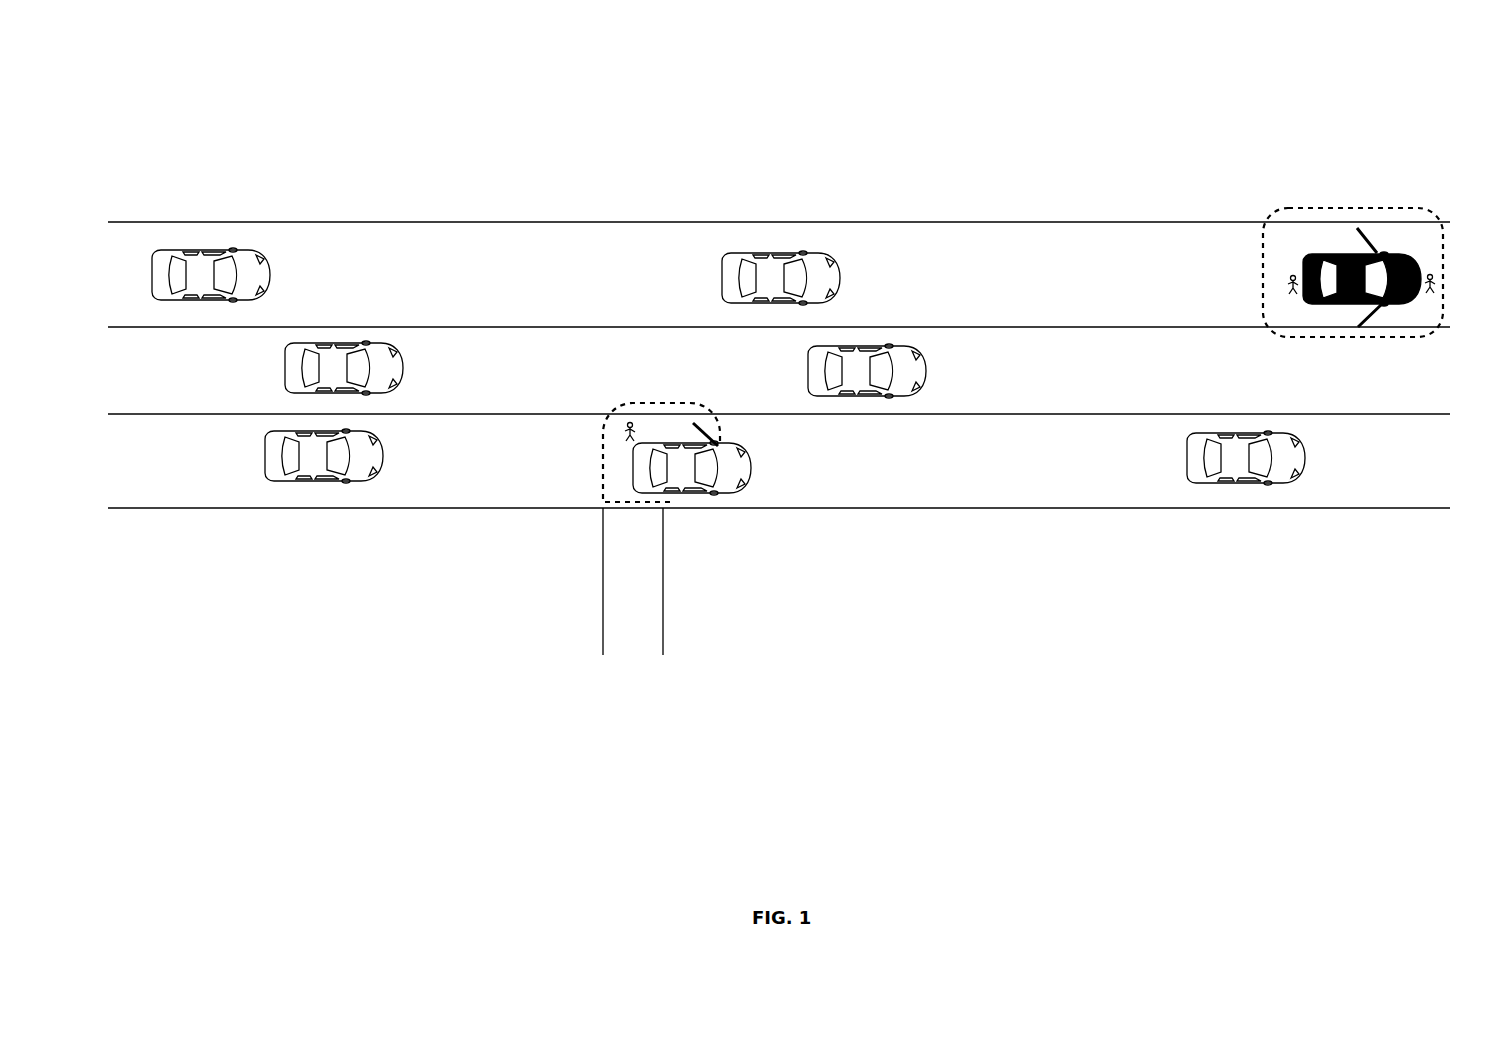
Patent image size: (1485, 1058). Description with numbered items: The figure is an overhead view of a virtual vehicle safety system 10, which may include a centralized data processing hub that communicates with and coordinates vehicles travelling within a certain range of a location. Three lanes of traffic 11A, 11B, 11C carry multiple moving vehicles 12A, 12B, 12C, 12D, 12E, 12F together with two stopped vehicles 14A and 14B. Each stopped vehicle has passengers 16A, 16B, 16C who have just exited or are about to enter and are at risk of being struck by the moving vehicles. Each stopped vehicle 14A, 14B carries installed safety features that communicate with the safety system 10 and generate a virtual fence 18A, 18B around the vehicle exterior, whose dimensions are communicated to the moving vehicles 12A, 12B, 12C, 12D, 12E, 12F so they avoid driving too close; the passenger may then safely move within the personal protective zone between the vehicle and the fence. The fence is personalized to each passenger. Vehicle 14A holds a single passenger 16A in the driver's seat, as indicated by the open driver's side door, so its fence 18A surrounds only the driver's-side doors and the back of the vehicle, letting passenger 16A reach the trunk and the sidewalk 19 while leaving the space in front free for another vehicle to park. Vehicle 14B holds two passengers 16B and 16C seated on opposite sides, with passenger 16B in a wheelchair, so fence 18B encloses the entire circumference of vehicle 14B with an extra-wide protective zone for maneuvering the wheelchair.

The virtual vehicle safety system 10 is at (957, 78).
The lane of traffic 11A is at (767, 274).
The lane of traffic 11B is at (767, 387).
The lane of traffic 11C is at (767, 480).
The moving vehicle 12A is at (202, 240).
The moving vehicle 12B is at (340, 338).
The moving vehicle 12C is at (773, 243).
The moving vehicle 12D is at (890, 336).
The moving vehicle 12E is at (319, 486).
The moving vehicle 12F is at (1245, 490).
The stopped vehicle 14A is at (732, 490).
The stopped vehicle 14B is at (1398, 303).
The passenger 16A is at (622, 420).
The passenger 16B is at (1283, 283).
The passenger 16C is at (1428, 270).
The virtual fence 18A is at (690, 402).
The virtual fence 18B is at (1338, 207).
The sidewalk 19 is at (648, 550).